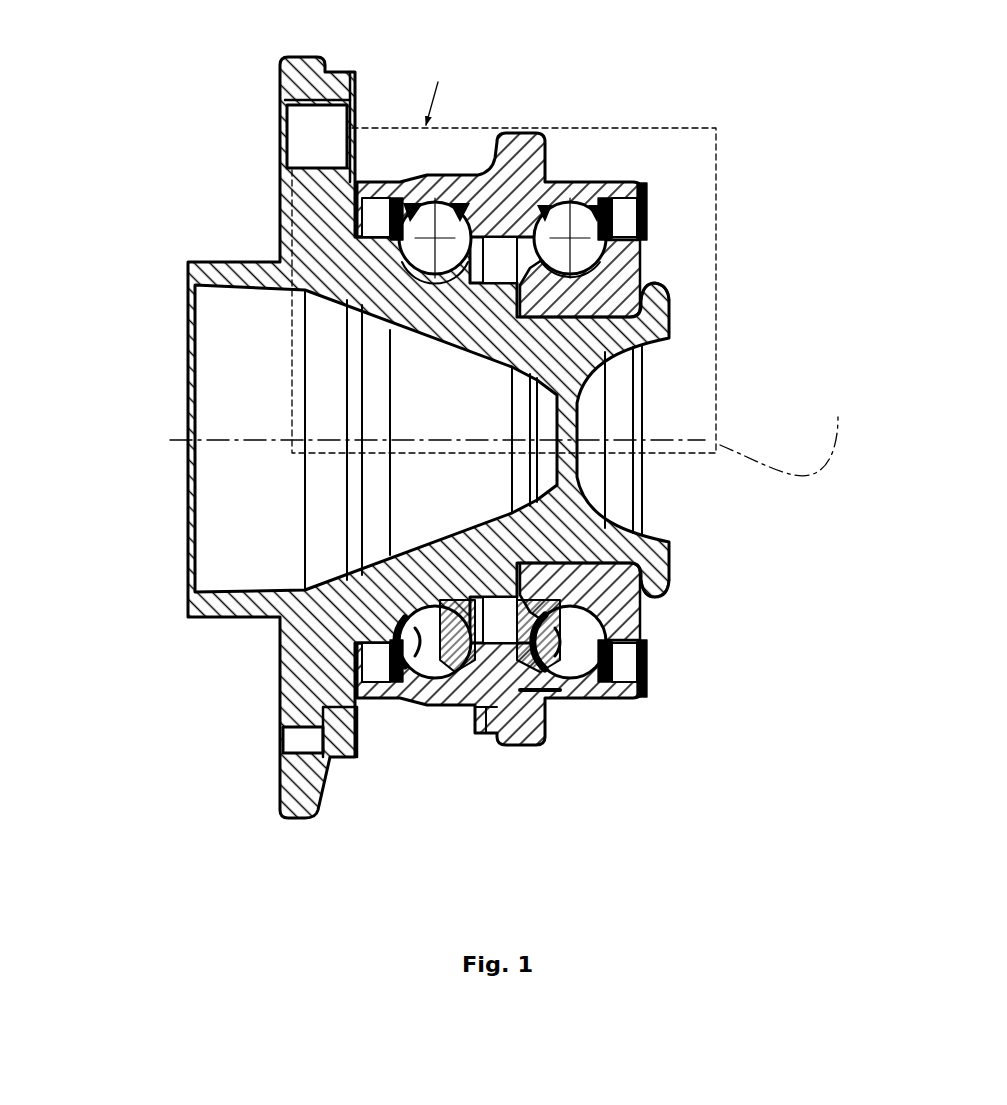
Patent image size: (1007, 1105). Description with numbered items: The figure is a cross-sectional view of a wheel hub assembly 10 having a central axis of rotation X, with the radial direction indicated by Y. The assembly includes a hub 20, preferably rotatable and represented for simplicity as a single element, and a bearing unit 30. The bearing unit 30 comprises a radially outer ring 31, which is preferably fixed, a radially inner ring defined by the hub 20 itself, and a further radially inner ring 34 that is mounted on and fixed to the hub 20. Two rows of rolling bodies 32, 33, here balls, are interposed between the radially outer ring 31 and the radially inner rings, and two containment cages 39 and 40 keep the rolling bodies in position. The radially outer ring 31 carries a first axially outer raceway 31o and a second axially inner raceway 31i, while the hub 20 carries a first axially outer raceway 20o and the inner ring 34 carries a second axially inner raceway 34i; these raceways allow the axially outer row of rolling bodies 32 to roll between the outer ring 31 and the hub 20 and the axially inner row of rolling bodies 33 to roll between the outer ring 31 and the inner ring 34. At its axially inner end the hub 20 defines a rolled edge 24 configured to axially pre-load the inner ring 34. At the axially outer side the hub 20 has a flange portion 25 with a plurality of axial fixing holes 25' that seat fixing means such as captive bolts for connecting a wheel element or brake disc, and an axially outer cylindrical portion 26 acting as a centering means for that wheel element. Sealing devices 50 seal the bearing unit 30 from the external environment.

The wheel hub assembly 10 is at (175, 102).
The hub 20 is at (265, 322).
The first axially outer raceway 20o is at (445, 262).
The rolled edge 24 is at (663, 310).
The axially outer flange portion 25 is at (280, 53).
The axial fixing holes 25' is at (285, 414).
The axially outer cylindrical portion 26 is at (212, 603).
The bearing unit 30 is at (630, 100).
The radially outer ring 31 is at (510, 182).
The first axially outer raceway 31o is at (442, 216).
The second axially inner raceway 31i is at (545, 223).
The axially outer row of rolling bodies 32 is at (417, 667).
The axially inner row of rolling bodies 33 is at (590, 645).
The radially inner ring 34 is at (602, 266).
The second axially inner raceway 34i is at (567, 272).
The containment cage 39 is at (543, 685).
The containment cage 40 is at (462, 645).
The sealing devices 50 is at (377, 220).
The central axis of rotation X is at (785, 430).
The radial direction Y is at (430, 92).